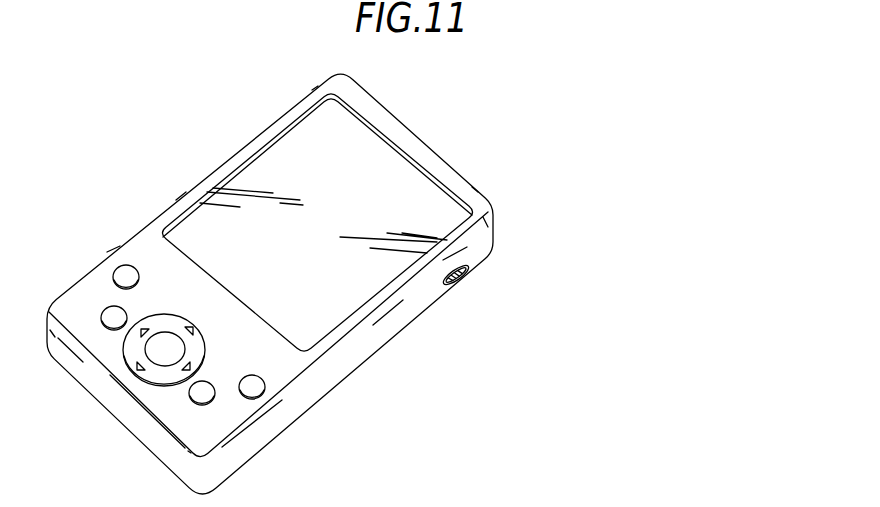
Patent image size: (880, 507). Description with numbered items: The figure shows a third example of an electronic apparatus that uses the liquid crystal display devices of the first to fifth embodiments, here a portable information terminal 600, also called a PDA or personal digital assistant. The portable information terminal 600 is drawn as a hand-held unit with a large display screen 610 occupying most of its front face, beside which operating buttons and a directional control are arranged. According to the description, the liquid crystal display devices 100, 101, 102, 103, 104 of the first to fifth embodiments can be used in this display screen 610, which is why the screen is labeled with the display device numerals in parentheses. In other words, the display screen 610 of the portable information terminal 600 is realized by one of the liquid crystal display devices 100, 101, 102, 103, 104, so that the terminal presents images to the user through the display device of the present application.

The portable information terminal 600 is at (404, 284).
The display screen 610 is at (462, 222).
The liquid crystal display device 100 is at (317, 222).
The liquid crystal display device 101 is at (317, 222).
The liquid crystal display device 102 is at (317, 222).
The liquid crystal display device 103 is at (317, 222).
The liquid crystal display device 104 is at (308, 311).